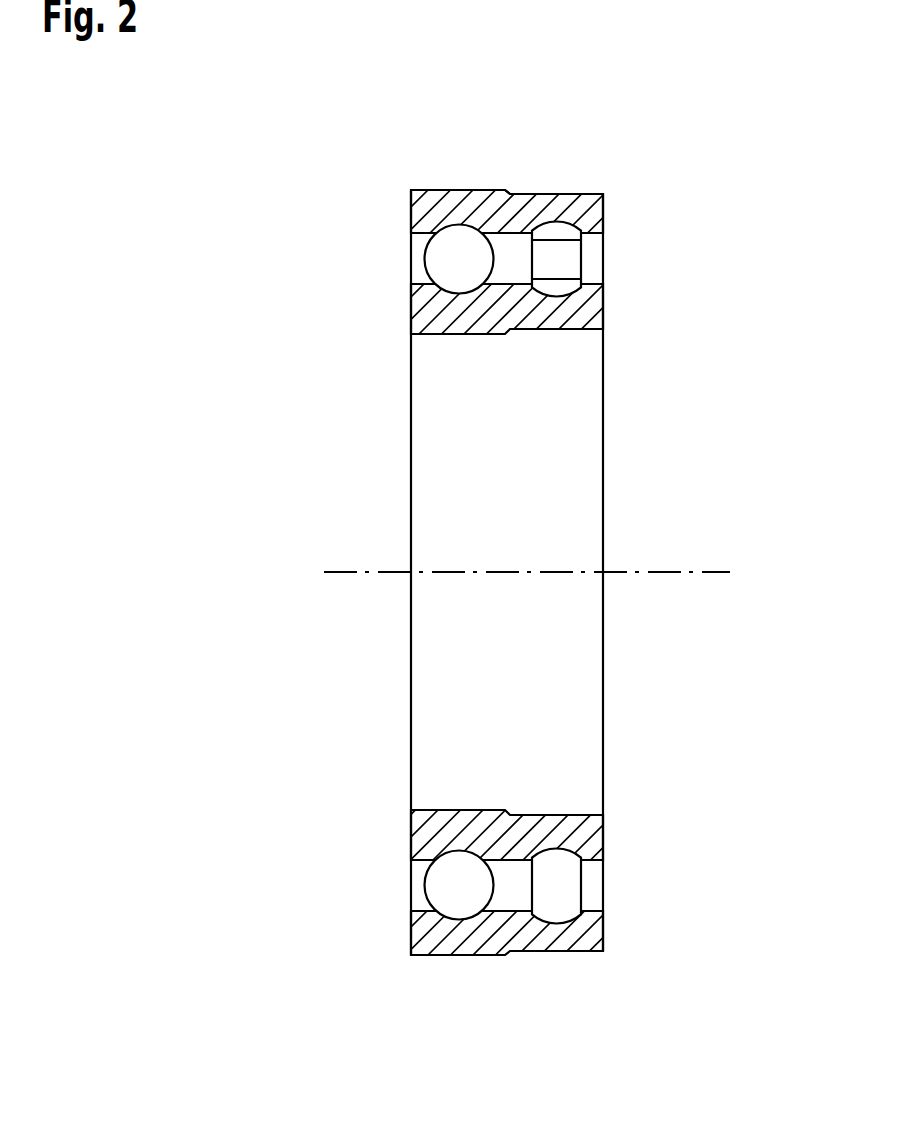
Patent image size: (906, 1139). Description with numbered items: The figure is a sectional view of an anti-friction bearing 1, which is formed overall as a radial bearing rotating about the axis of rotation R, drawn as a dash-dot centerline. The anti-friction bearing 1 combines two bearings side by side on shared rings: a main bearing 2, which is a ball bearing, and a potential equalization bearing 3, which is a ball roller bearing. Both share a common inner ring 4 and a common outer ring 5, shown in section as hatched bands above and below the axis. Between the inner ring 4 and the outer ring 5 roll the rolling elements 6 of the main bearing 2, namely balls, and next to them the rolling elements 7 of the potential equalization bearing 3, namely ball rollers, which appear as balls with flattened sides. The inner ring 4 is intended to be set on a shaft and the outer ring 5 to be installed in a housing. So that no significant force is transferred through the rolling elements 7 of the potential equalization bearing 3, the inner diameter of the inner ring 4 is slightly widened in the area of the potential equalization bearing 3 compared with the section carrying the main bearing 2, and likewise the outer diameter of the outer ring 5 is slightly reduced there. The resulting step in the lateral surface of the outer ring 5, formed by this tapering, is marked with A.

The anti-friction bearing 1 is at (714, 187).
The main bearing 2 is at (450, 984).
The potential equalization bearing 3 is at (567, 984).
The inner ring 4 is at (437, 307).
The outer ring 5 is at (423, 208).
The rolling elements 6 is at (432, 883).
The rolling elements 7 is at (570, 883).
The step A is at (508, 190).
The axis of rotation R is at (655, 575).